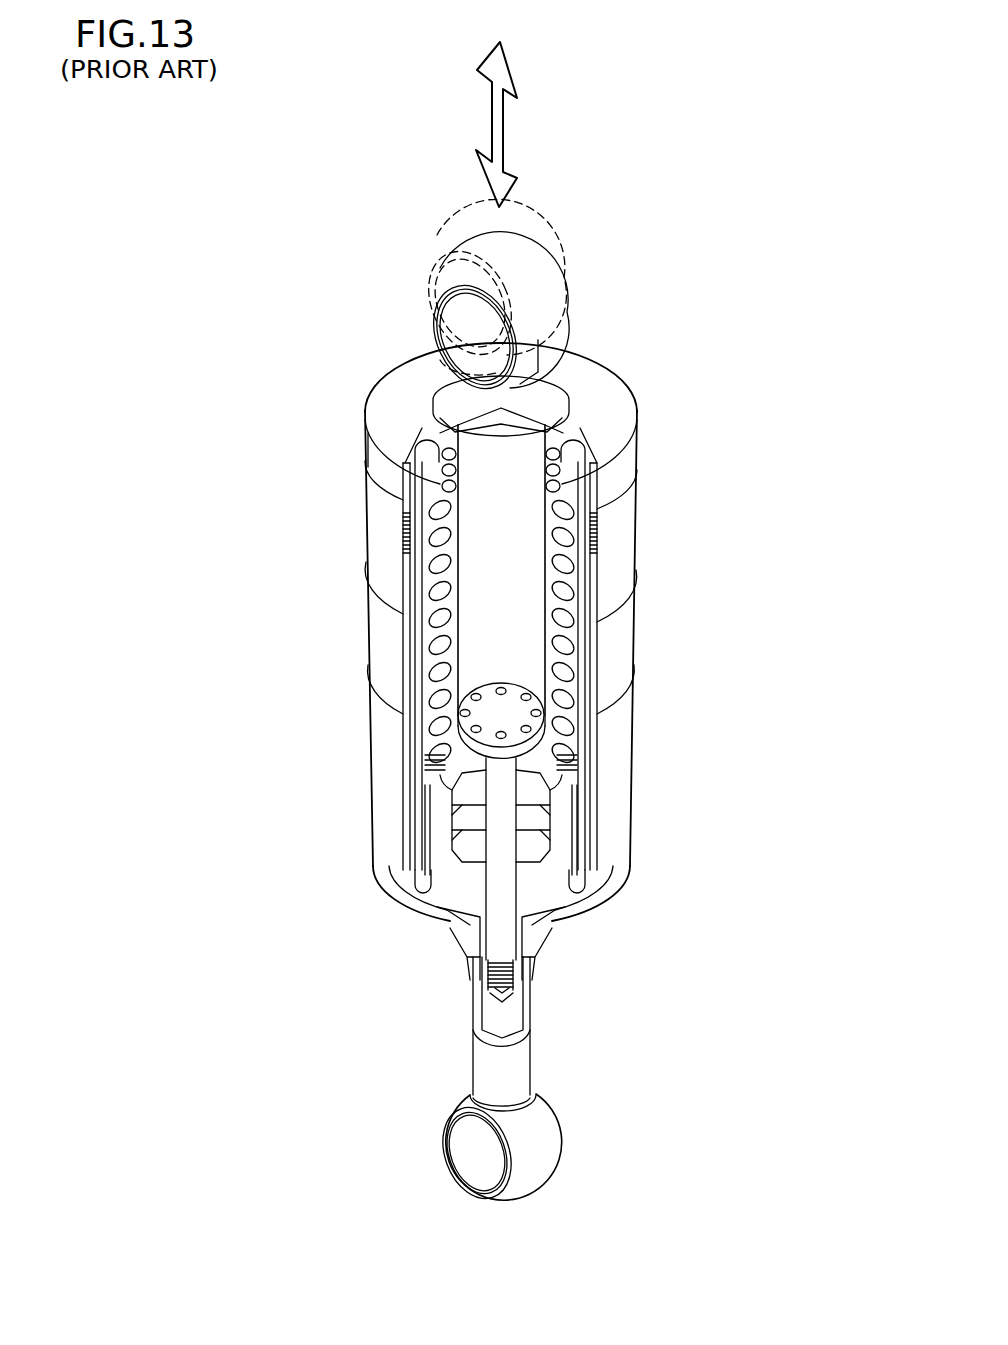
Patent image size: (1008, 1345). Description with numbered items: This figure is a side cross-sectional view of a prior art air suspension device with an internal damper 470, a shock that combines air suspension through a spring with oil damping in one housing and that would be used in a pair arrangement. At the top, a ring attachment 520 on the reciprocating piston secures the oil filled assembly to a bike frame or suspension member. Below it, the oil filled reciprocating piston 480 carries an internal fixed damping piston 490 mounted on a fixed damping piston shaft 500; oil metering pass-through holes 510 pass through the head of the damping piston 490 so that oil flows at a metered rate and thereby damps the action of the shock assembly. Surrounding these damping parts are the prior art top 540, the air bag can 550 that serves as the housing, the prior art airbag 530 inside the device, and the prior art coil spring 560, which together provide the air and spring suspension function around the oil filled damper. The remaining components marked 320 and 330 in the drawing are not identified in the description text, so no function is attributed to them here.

The prior art shock assembly with internal damper 470 is at (757, 301).
The ring attachment 520 is at (561, 317).
The top 540 is at (450, 424).
The oil filled reciprocating piston 480 is at (606, 760).
The coil spring 560 is at (410, 607).
The inner tube 320 is at (581, 666).
The oil metering pass-through holes 510 is at (524, 696).
The fixed internal damping piston 490 is at (600, 693).
The air bag can 550 is at (443, 665).
The airbag 530 is at (489, 1022).
The rod guide 330 is at (569, 875).
The fixed damping piston shaft 500 is at (557, 948).